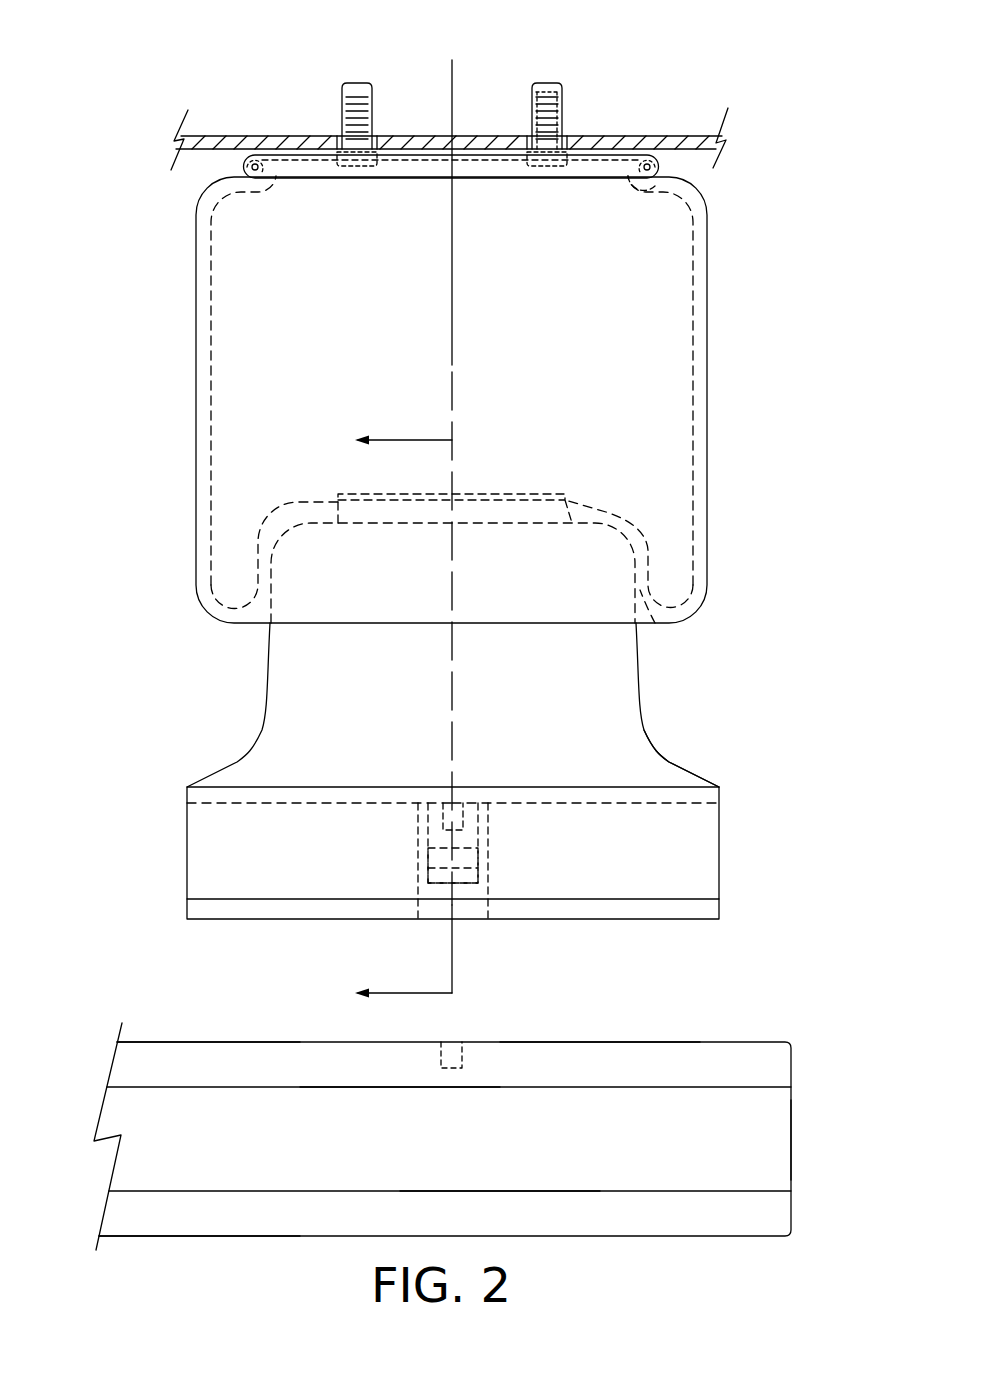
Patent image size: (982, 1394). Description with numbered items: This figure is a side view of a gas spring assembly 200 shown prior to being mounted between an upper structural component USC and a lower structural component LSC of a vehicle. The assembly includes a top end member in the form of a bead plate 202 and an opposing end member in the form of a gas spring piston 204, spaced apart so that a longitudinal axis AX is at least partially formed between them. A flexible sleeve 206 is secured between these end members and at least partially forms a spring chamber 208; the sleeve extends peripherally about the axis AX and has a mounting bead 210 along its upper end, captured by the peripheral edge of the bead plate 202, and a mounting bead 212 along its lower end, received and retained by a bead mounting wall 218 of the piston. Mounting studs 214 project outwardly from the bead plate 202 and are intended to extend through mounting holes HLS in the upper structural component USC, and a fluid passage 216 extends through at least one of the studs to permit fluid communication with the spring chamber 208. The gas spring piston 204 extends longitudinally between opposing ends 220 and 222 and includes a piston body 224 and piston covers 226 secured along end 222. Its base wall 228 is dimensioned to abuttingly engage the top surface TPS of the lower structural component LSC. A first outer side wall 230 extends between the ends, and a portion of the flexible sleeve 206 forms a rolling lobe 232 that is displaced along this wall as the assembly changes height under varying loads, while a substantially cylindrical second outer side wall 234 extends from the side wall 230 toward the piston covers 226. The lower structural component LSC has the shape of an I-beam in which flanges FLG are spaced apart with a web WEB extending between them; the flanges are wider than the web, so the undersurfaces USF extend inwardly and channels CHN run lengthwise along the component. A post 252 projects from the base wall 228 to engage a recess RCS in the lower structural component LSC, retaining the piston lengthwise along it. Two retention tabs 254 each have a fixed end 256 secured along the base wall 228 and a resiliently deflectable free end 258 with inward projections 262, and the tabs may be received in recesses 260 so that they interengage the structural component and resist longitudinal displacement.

The gas spring assembly 200 is at (481, 490).
The bead plate 202 is at (451, 120).
The gas spring piston 204 is at (496, 771).
The flexible sleeve 206 is at (488, 400).
The spring chamber 208 is at (394, 380).
The mounting bead 210 is at (627, 248).
The mounting bead 212 is at (457, 504).
The mounting studs 214 is at (374, 96).
The fluid passage 216 is at (557, 78).
The bead mounting wall 218 is at (537, 508).
The end 220 is at (495, 546).
The end 222 is at (396, 843).
The piston body 224 is at (435, 705).
The piston covers 226 is at (412, 928).
The base wall 228 is at (692, 806).
The outer side wall 230 is at (682, 762).
The rolling lobe 232 is at (682, 630).
The outer side wall 234 is at (205, 828).
The post 252 is at (479, 798).
The retention tabs 254 is at (386, 863).
The fixed end 256 is at (440, 822).
The free end 258 is at (472, 878).
The recesses 260 is at (383, 880).
The projections 262 is at (472, 856).
The longitudinal axis AX is at (452, 284).
The upper structural component USC is at (449, 108).
The mounting holes HLS is at (383, 146).
The channels CHN is at (472, 1136).
The flanges FLG is at (165, 1058).
The undersurfaces USF is at (227, 1088).
The web WEB is at (273, 1175).
The top surface TPS is at (676, 1040).
The lower structural component LSC is at (773, 1074).
The recess RCS is at (466, 1054).